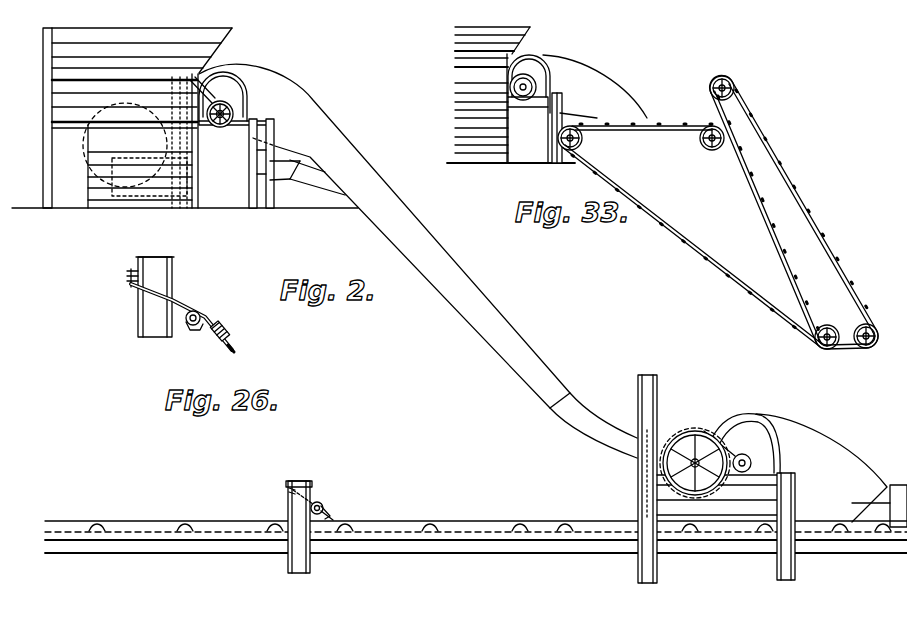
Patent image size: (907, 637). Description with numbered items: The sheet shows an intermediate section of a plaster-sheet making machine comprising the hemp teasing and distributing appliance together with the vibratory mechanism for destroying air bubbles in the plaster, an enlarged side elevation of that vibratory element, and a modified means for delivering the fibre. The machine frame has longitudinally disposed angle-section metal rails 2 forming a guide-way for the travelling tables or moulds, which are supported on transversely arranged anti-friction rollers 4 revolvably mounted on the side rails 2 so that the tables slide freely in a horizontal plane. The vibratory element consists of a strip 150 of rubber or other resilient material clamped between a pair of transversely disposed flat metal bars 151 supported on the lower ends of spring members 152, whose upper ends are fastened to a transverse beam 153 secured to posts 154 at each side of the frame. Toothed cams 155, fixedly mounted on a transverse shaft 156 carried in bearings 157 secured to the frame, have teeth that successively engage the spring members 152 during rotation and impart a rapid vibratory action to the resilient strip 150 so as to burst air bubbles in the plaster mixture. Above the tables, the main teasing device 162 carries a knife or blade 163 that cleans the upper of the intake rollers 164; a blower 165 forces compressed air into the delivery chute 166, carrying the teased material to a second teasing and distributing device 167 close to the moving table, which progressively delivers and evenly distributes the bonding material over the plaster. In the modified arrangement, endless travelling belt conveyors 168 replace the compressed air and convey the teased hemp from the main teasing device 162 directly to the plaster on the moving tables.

In FIG. 2, the angle-section metal rails 2 is at (465, 522).
In FIG. 2, the anti-friction rollers 4 is at (552, 520).
In FIG. 2, the strip of resilient material 150 is at (333, 519).
In FIG. 26, the strip of resilient material 150 is at (235, 346).
In FIG. 2, the flat metal bars 151 is at (328, 511).
In FIG. 26, the flat metal bars 151 is at (226, 328).
In FIG. 26, the spring members 152 is at (181, 303).
In FIG. 2, the transverse beam 153 is at (288, 483).
In FIG. 26, the transverse beam 153 is at (127, 280).
In FIG. 2, the posts 154 is at (301, 484).
In FIG. 26, the posts 154 is at (138, 324).
In FIG. 26, the toothed cams 155 is at (188, 327).
In FIG. 26, the transverse shaft 156 is at (200, 331).
In FIG. 2, the bearings 157 is at (310, 517).
In FIG. 2, the teasing device 162 is at (203, 132).
In FIG. 33, the teasing device 162 is at (535, 109).
In FIG. 2, the knife or blade 163 is at (190, 78).
In FIG. 2, the intake rollers 164 is at (158, 96).
In FIG. 2, the blower 165 is at (100, 152).
In FIG. 2, the delivery chute 166 is at (418, 261).
In FIG. 2, the second teasing and distributing device 167 is at (697, 430).
In FIG. 33, the endless travelling belt conveyors 168 is at (646, 130).